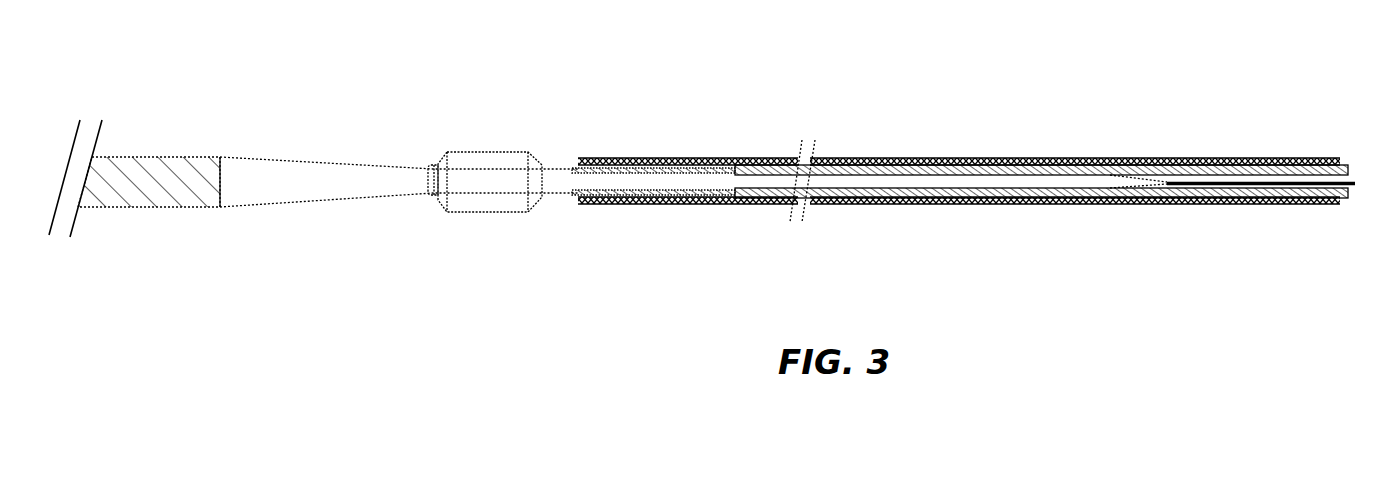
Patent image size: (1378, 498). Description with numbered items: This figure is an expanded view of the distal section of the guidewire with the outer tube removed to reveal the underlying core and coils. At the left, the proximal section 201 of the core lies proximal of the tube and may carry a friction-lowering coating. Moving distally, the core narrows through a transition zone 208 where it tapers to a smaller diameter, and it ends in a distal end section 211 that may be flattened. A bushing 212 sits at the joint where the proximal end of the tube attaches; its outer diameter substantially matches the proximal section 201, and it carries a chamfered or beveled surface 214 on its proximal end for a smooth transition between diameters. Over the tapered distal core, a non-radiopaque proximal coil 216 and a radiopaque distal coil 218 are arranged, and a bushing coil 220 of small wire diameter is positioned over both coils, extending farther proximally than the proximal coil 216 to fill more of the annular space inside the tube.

The proximal section 201 is at (165, 157).
The transition zone 208 is at (372, 183).
The distal end section 211 is at (1252, 186).
The bushing 212 is at (493, 157).
The chamfered or beveled surface 214 is at (440, 160).
The proximal coil 216 is at (895, 172).
The distal coil 218 is at (1183, 170).
The bushing coil 220 is at (707, 160).